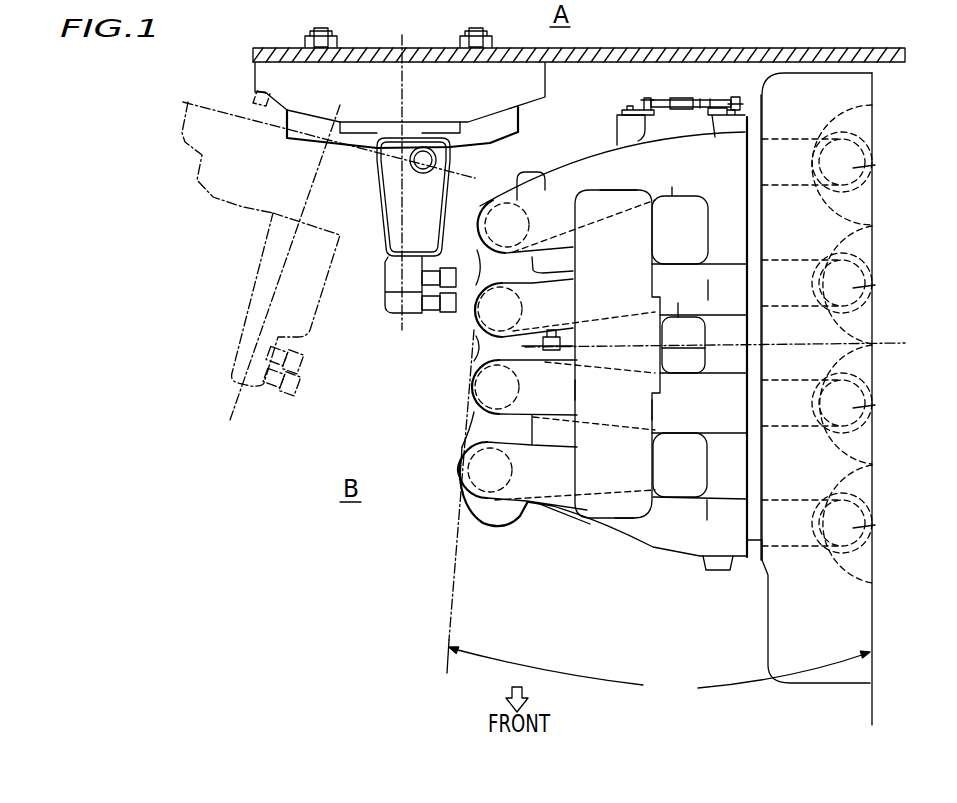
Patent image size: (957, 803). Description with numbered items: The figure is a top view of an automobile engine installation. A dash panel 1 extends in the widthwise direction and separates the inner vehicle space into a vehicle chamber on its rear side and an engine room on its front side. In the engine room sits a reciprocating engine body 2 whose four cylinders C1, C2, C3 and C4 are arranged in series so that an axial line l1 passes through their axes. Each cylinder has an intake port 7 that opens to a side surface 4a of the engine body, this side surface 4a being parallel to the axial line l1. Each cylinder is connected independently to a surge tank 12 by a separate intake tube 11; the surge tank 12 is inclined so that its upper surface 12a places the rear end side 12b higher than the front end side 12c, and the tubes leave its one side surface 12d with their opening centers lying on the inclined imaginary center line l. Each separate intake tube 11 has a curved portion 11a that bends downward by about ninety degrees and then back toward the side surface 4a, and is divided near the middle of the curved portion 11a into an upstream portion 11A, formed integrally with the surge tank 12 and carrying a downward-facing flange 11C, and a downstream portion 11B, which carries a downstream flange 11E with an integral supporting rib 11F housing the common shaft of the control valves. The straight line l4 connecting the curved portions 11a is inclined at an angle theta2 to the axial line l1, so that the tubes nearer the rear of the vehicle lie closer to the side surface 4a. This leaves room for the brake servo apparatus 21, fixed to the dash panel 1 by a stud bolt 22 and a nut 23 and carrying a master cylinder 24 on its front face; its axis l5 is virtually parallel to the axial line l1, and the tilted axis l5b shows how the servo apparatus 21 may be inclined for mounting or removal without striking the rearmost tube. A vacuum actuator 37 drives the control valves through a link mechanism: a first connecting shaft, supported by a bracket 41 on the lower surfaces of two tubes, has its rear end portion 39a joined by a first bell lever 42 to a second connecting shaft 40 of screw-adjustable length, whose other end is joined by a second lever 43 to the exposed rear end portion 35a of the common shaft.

The dash panel 1 is at (625, 47).
The engine body 2 is at (766, 602).
The side surface 4a is at (757, 235).
The intake port 7 is at (878, 166).
The separate intake tube 11 is at (589, 166).
The curved portion 11a is at (483, 204).
The upstream portion 11A is at (541, 200).
The downstream portion 11B is at (553, 558).
The flange 11C is at (460, 470).
The flange 11E is at (753, 458).
The supporting rib 11F is at (730, 325).
The surge tank 12 is at (597, 504).
The upper surface 12a is at (650, 405).
The rear end side 12b is at (623, 190).
The front end side 12c is at (625, 558).
The one side surface 12d is at (576, 383).
The servo apparatus 21 is at (267, 76).
The stud bolt 22 is at (328, 32).
The nut 23 is at (308, 42).
The master cylinder 24 is at (387, 268).
The rear end portion 35a is at (717, 118).
The actuator 37 is at (553, 338).
The rear end portion 39a is at (622, 110).
The second connecting shaft 40 is at (668, 100).
The bracket 41 is at (645, 133).
The first bell lever 42 is at (647, 98).
The second lever 43 is at (742, 106).
The first cylinder C1 is at (865, 585).
The second cylinder C2 is at (843, 455).
The third cylinder C3 is at (855, 340).
The fourth cylinder C4 is at (855, 107).
The imaginary center line l is at (893, 343).
The axial line l1 is at (872, 703).
The straight line l4 is at (452, 577).
The axis of servo apparatus l5 is at (403, 337).
The axis of inclined servo apparatus l5b is at (237, 407).
The angle theta2 is at (659, 675).